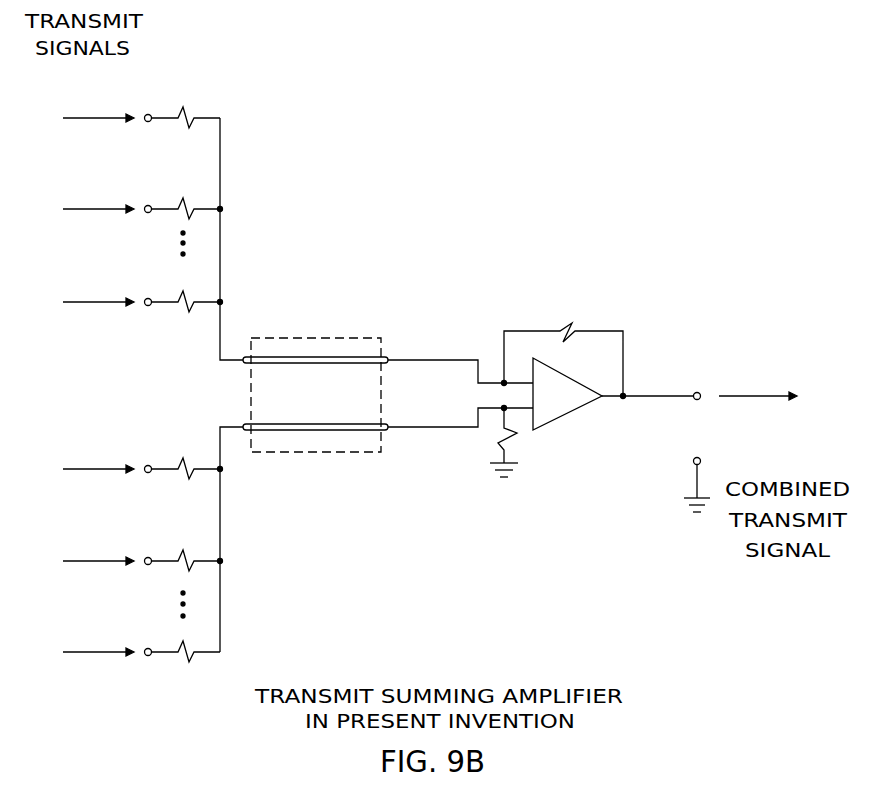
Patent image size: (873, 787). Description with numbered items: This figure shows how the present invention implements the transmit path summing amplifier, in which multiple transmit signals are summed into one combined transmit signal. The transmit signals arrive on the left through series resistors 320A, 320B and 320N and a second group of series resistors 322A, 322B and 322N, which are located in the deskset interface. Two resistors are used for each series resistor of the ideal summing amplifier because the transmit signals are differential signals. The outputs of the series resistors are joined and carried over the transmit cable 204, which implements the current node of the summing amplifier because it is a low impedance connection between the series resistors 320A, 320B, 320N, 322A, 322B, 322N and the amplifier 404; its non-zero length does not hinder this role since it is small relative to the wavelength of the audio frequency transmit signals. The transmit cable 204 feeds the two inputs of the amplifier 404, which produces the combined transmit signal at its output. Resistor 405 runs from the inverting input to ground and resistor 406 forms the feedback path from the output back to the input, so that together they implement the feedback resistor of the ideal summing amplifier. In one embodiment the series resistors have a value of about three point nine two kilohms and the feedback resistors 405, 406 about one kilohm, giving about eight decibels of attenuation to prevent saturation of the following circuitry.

The series resistor 320A is at (183, 107).
The series resistor 320B is at (183, 198).
The series resistor 320N is at (183, 291).
The series resistor 322A is at (183, 458).
The series resistor 322B is at (183, 550).
The series resistor 322N is at (183, 641).
The transmit cable 204 is at (333, 338).
The amplifier 404 is at (555, 421).
The feedback resistor 405 is at (498, 444).
The feedback resistor 406 is at (570, 322).